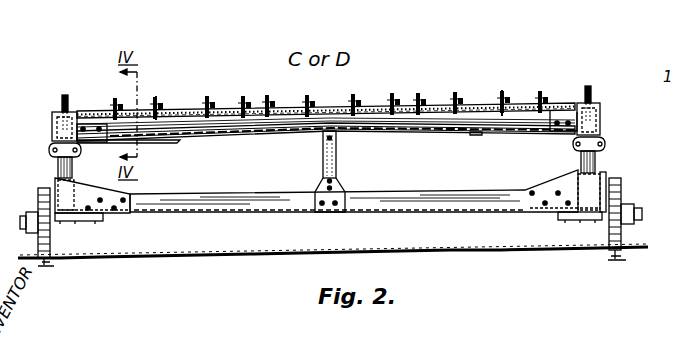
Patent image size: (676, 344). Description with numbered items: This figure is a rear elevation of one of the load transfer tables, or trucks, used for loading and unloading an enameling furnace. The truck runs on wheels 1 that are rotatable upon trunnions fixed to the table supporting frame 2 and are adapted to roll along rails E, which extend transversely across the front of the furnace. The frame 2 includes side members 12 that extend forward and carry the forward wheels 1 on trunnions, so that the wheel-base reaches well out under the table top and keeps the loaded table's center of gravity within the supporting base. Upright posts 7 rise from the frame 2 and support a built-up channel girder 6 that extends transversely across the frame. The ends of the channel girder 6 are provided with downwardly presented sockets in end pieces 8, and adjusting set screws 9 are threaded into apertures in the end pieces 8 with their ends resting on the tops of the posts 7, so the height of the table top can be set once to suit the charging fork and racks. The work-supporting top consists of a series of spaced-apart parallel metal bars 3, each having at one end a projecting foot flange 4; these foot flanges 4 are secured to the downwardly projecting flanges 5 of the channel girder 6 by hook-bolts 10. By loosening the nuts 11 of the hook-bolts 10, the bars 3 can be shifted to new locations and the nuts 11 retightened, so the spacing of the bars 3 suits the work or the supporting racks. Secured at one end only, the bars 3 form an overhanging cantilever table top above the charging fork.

The wheels 1 is at (40, 196).
The table supporting frame 2 is at (110, 216).
The metal bars 3 is at (208, 103).
The foot flange 4 is at (212, 106).
The downwardly projecting flanges 5 is at (220, 117).
The channel girder 6 is at (288, 130).
The upright posts 7 is at (72, 166).
The end pieces 8 is at (52, 126).
The adjusting set screws 9 is at (64, 97).
The hook-bolts 10 is at (149, 132).
The nuts 11 is at (160, 108).
The side members 12 is at (58, 186).
The rails E is at (50, 264).